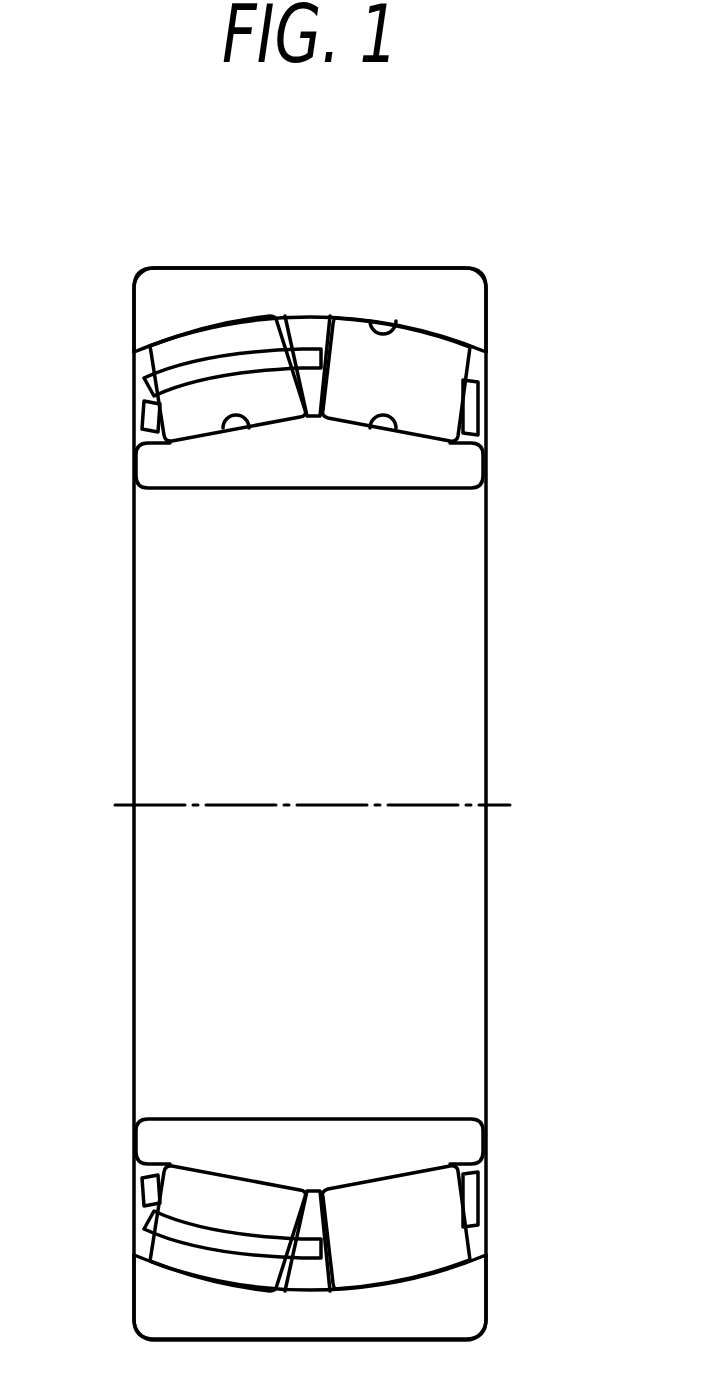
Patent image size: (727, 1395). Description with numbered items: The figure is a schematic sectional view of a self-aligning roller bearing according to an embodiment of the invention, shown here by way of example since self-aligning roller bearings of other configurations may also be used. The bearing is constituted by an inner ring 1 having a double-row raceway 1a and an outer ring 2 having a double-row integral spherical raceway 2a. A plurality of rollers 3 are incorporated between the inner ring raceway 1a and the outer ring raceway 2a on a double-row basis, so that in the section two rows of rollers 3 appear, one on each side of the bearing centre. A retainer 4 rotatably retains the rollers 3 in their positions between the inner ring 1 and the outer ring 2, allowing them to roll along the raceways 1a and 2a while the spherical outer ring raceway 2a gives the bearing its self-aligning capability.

The inner ring 1 is at (460, 462).
The inner ring raceway 1a is at (230, 420).
The outer ring 2 is at (462, 305).
The outer ring raceway 2a is at (399, 322).
The rollers 3 is at (188, 415).
The retainer 4 is at (224, 367).